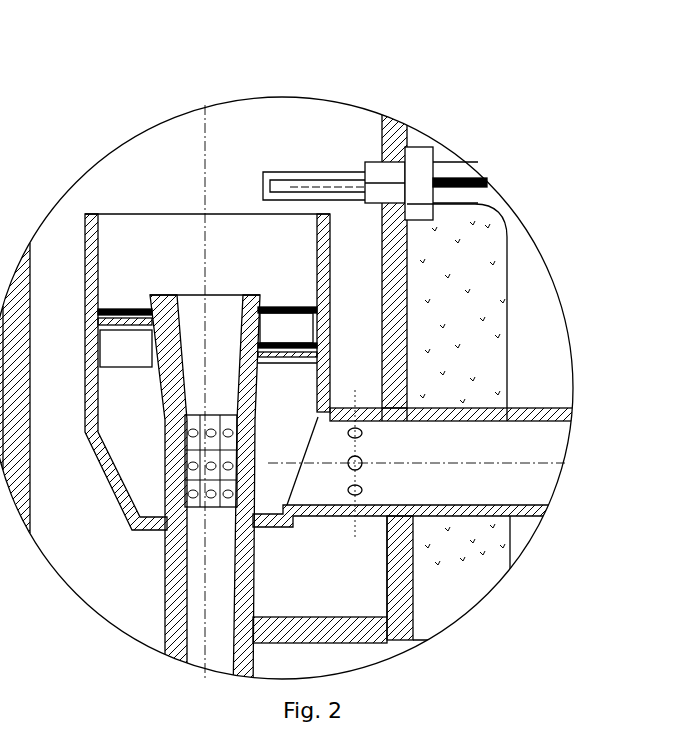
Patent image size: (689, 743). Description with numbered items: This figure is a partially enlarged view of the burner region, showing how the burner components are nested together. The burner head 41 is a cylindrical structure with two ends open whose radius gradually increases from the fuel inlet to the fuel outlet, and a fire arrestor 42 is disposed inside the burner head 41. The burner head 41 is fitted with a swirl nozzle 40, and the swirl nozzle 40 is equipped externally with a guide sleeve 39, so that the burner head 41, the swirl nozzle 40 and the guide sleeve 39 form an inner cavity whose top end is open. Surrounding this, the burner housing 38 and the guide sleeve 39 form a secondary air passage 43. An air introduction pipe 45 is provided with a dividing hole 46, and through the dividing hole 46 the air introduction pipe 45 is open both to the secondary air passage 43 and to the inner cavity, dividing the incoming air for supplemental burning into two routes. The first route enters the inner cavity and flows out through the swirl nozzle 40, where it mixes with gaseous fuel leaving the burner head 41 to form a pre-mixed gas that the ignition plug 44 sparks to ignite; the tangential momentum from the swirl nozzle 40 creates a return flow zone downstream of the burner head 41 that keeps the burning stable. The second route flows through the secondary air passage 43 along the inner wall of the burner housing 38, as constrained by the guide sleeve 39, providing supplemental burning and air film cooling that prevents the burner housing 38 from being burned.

The burner housing 38 is at (42, 222).
The guide sleeve 39 is at (95, 222).
The swirl nozzle 40 is at (115, 311).
The burner head 41 is at (190, 295).
The fire arrestor 42 is at (250, 294).
The secondary air passage 43 is at (350, 215).
The ignition plug 44 is at (456, 180).
The air introduction pipe 45 is at (537, 410).
The dividing hole 46 is at (362, 492).